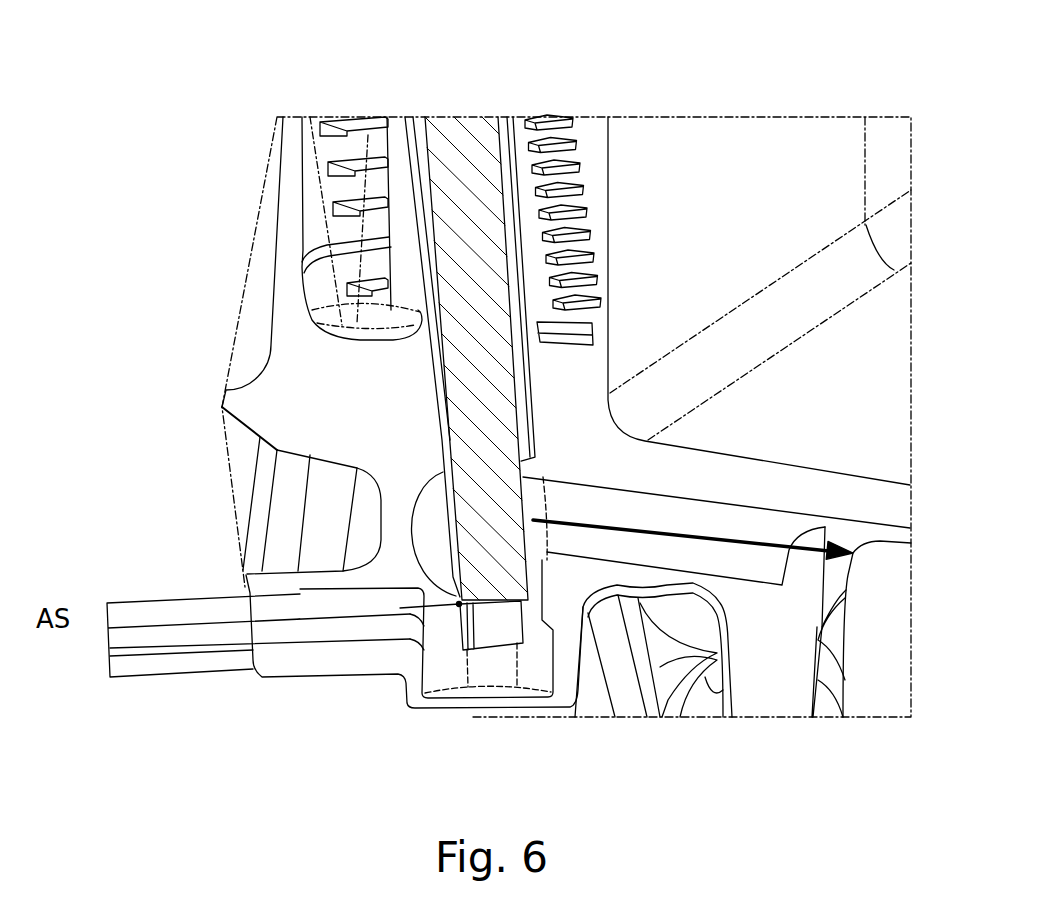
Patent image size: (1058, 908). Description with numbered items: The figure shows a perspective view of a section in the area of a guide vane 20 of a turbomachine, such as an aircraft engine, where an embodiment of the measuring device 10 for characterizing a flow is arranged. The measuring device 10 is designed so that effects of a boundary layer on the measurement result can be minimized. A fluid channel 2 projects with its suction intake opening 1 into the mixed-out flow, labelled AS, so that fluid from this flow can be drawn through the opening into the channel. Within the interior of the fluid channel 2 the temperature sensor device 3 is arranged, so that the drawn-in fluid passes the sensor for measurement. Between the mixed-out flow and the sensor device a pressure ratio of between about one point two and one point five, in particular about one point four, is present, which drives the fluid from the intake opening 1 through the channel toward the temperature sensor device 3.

The suction intake opening 1 is at (107, 638).
The fluid channel 2 is at (185, 653).
The temperature sensor device 3 is at (513, 637).
The measuring device 10 is at (226, 721).
The guide vane 20 is at (733, 138).